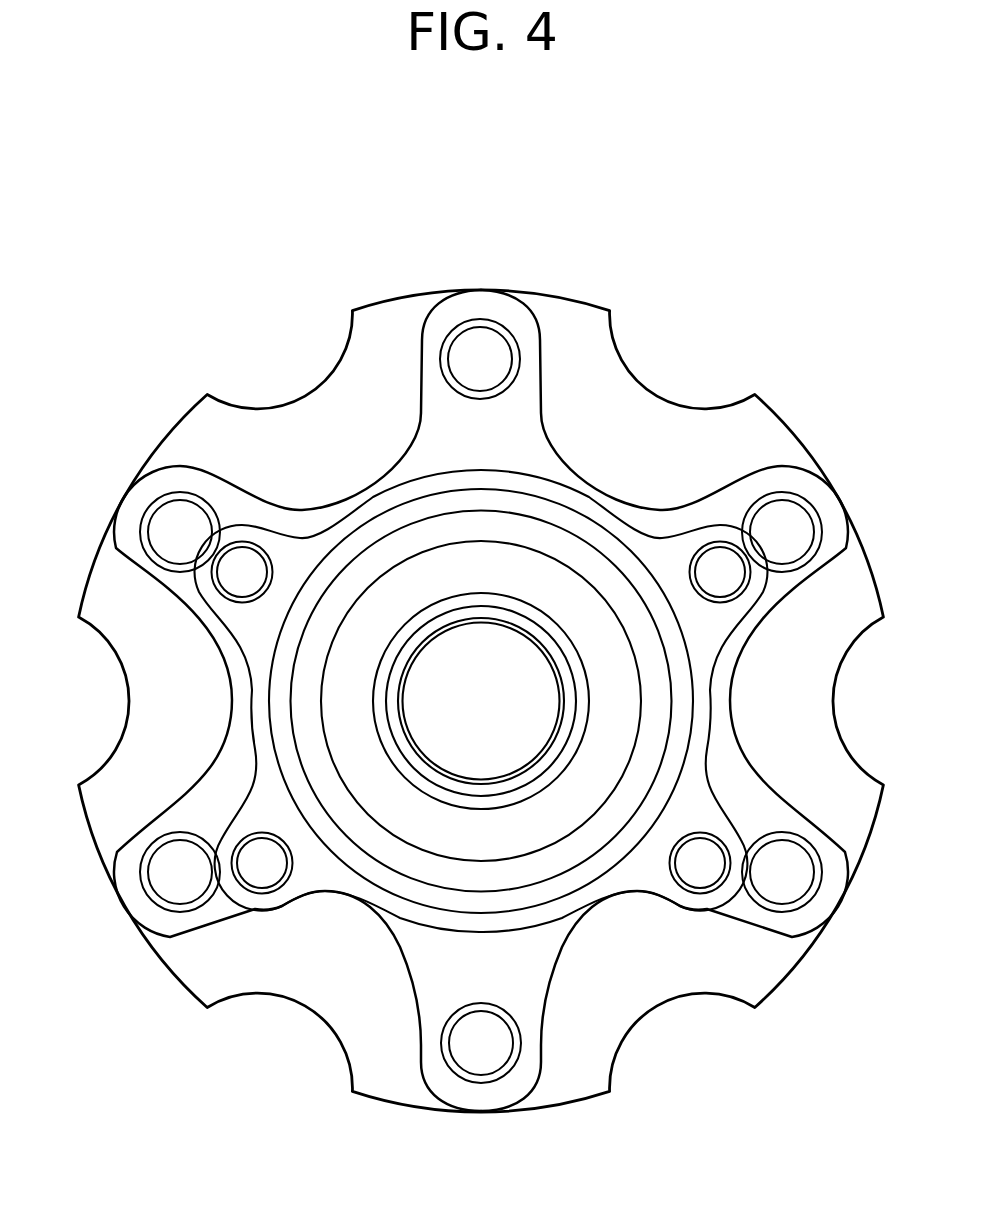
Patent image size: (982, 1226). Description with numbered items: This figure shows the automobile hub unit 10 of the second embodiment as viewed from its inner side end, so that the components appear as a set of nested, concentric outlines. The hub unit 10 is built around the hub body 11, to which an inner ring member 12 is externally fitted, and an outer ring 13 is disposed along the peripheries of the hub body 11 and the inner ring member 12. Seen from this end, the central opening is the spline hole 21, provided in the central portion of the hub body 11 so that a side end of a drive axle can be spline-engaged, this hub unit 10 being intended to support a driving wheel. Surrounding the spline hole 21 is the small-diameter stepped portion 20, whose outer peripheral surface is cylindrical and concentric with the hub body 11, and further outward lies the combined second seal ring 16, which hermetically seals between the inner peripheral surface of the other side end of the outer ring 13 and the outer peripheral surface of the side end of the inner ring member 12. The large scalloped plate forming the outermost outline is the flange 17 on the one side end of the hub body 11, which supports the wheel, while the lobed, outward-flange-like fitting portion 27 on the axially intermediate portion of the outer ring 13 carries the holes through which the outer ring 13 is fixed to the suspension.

The hub unit 10 is at (632, 347).
The hub body 11 is at (253, 518).
The inner ring member 12 is at (570, 607).
The outer ring 13 is at (363, 515).
The second seal ring 16 is at (360, 827).
The flange 17 is at (473, 306).
The small-diameter stepped portion 20 is at (553, 787).
The spline hole 21 is at (452, 767).
The fitting portion 27 is at (243, 620).